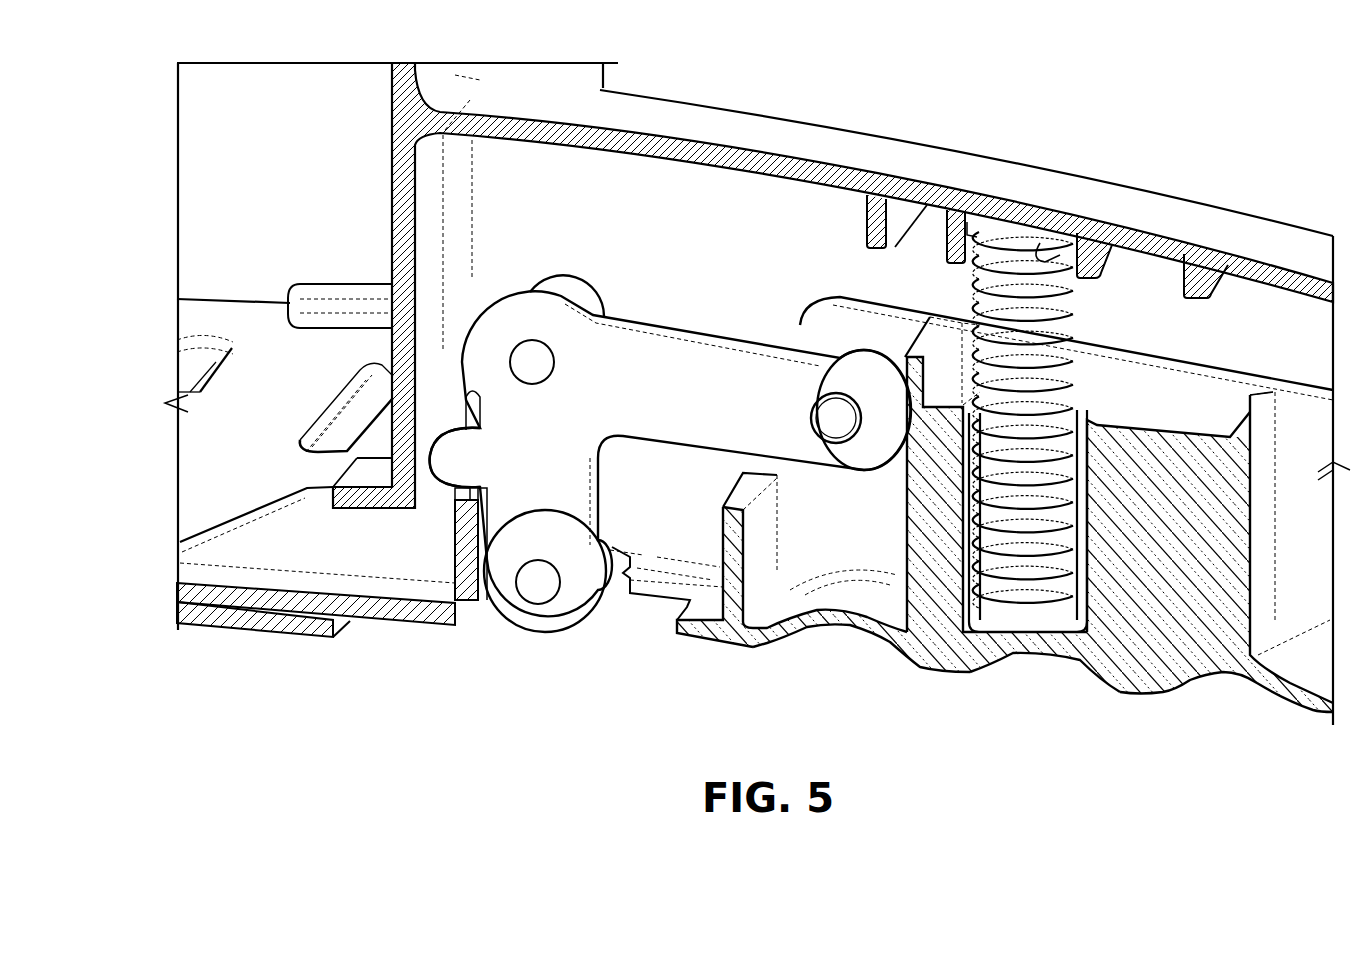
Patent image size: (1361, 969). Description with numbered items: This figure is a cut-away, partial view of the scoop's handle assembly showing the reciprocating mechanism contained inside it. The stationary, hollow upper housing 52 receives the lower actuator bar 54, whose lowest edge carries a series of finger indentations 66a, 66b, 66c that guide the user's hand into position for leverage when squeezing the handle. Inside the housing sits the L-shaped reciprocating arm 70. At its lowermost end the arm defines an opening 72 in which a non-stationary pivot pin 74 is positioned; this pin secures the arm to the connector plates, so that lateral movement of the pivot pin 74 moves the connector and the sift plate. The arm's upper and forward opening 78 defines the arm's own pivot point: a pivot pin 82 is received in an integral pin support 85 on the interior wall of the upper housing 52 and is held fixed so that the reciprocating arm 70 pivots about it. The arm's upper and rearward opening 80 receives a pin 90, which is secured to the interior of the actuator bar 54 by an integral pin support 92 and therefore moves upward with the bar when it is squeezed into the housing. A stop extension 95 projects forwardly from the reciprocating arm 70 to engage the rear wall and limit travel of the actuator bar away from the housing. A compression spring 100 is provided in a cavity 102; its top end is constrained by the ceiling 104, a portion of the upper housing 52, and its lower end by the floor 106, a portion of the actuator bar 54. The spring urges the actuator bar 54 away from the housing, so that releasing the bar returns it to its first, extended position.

The upper housing 52 is at (680, 237).
The actuator bar 54 is at (1133, 440).
The indentation 66a is at (833, 627).
The indentation 66b is at (1037, 655).
The indentation 66c is at (1226, 675).
The reciprocating arm 70 is at (470, 613).
The opening 72 is at (547, 574).
The pivot pin 74 is at (540, 582).
The opening 78 is at (548, 348).
The opening 80 is at (815, 395).
The pivot pin 82 is at (523, 362).
The pin support 85 is at (583, 300).
The pin 90 is at (601, 452).
The pin support 92 is at (873, 350).
The stop extension 95 is at (460, 482).
The spring 100 is at (1050, 240).
The cavity 102 is at (977, 508).
The ceiling 104 is at (978, 280).
The floor 106 is at (975, 622).